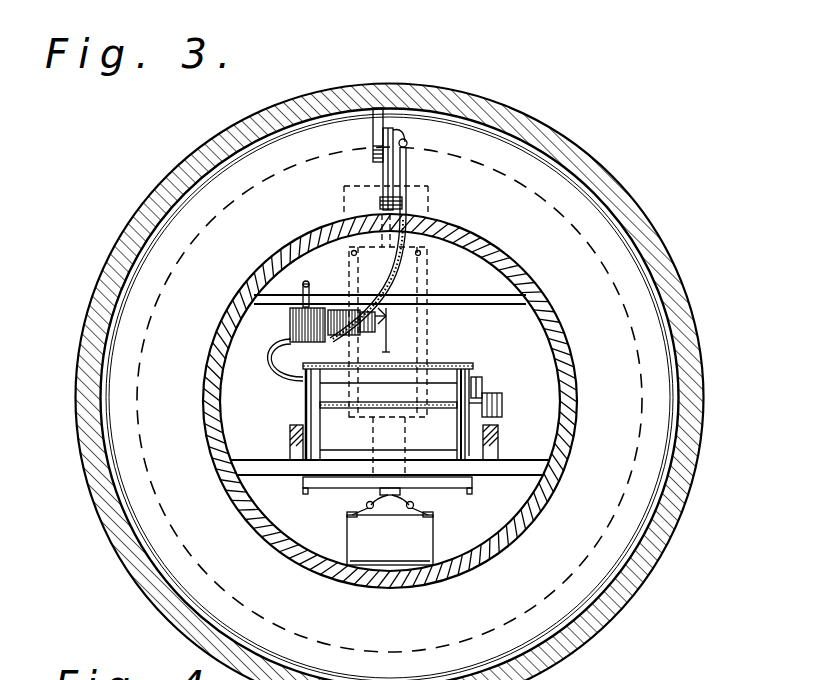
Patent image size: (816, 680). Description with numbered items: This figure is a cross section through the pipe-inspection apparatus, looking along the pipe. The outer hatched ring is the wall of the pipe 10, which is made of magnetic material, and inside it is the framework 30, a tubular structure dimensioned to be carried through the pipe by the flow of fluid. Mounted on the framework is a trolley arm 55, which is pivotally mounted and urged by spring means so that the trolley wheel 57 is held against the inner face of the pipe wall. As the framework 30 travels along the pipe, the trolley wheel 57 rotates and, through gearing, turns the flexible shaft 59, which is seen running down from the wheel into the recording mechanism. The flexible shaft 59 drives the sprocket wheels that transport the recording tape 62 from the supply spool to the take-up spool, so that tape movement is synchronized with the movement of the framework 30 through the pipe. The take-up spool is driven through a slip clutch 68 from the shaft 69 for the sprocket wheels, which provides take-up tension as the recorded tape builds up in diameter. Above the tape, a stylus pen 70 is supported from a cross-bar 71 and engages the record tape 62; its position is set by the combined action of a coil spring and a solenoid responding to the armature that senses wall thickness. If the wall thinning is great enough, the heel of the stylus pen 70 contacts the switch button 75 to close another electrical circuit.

The pipe 10 is at (566, 139).
The framework 30 is at (568, 428).
The trolley arm 55 is at (383, 163).
The trolley wheel 57 is at (373, 130).
The flexible shaft 59 is at (406, 165).
The recording tape 62 is at (452, 362).
The slip clutch 68 is at (498, 393).
The shaft 69 is at (420, 533).
The stylus pen 70 is at (386, 347).
The cross-bar 71 is at (476, 290).
The switch button 75 is at (386, 306).